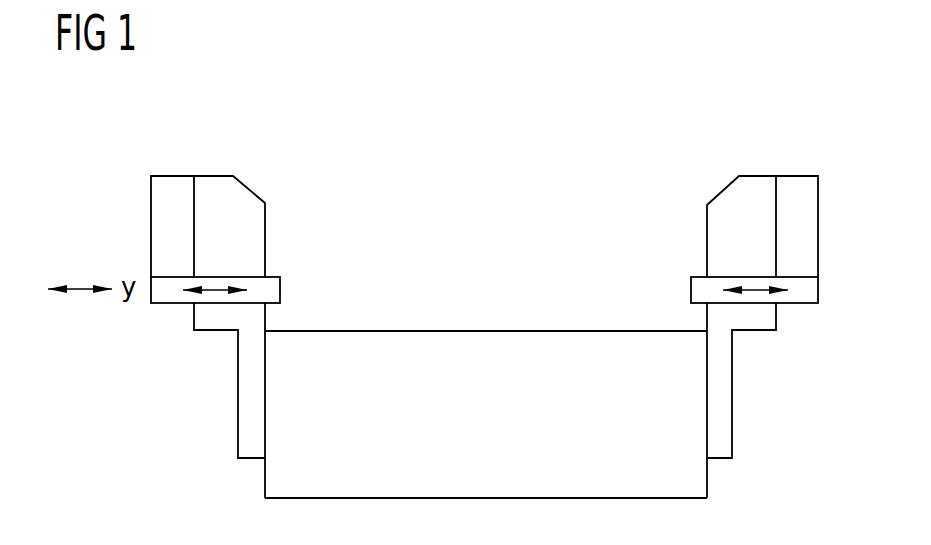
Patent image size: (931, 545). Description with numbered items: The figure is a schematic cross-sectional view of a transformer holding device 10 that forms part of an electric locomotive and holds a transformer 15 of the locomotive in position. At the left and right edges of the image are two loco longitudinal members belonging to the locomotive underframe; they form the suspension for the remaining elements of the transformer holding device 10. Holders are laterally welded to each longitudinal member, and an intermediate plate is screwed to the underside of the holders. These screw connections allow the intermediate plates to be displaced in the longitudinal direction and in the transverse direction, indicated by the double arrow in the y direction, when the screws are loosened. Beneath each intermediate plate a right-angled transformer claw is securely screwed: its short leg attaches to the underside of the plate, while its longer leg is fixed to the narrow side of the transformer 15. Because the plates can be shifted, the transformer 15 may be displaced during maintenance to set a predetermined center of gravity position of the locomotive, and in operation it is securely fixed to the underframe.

The transformer holding device 10 is at (587, 109).
The transformer 15 is at (486, 338).